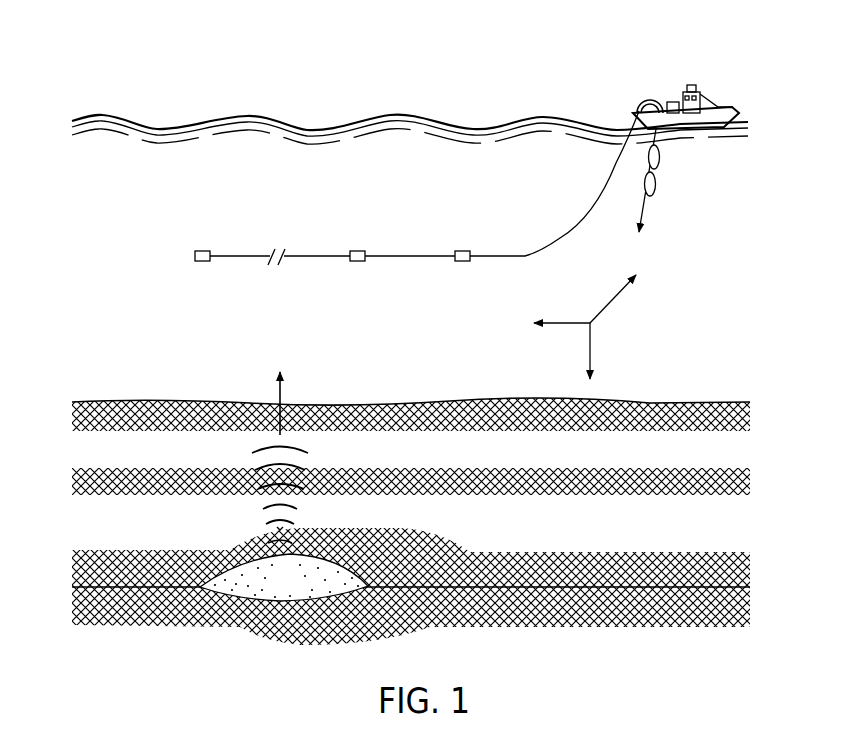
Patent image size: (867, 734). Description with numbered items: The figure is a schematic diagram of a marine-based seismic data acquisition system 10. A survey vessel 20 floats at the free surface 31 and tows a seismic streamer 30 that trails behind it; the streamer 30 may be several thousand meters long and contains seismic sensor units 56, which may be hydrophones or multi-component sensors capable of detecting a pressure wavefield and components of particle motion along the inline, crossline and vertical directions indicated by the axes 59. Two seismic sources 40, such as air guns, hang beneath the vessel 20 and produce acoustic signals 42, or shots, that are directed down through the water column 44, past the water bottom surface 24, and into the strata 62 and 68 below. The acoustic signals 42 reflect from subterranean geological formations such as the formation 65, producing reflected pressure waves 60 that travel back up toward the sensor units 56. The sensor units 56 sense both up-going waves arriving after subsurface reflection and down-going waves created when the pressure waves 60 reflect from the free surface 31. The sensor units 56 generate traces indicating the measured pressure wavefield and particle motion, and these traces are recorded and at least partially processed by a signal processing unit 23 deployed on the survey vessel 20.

The marine-based seismic data acquisition system 10 is at (230, 88).
The free surface 31 is at (361, 118).
The survey vessel 20 is at (723, 104).
The signal processing unit 23 is at (672, 102).
The seismic streamer 30 is at (604, 189).
The seismic sensor unit 56 is at (203, 262).
The seismic source 40 is at (659, 156).
The acoustic signals 42 is at (646, 210).
The water column 44 is at (681, 289).
The axes 59 is at (548, 356).
The water bottom surface 24 is at (700, 401).
The pressure waves 60 is at (254, 510).
The strata 62 is at (487, 560).
The formation 65 is at (269, 591).
The strata 68 is at (638, 612).